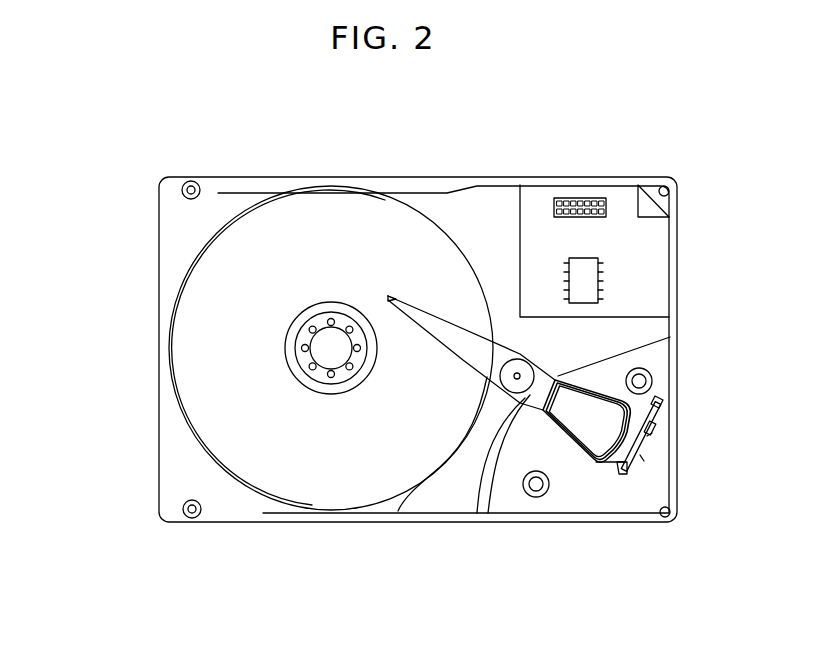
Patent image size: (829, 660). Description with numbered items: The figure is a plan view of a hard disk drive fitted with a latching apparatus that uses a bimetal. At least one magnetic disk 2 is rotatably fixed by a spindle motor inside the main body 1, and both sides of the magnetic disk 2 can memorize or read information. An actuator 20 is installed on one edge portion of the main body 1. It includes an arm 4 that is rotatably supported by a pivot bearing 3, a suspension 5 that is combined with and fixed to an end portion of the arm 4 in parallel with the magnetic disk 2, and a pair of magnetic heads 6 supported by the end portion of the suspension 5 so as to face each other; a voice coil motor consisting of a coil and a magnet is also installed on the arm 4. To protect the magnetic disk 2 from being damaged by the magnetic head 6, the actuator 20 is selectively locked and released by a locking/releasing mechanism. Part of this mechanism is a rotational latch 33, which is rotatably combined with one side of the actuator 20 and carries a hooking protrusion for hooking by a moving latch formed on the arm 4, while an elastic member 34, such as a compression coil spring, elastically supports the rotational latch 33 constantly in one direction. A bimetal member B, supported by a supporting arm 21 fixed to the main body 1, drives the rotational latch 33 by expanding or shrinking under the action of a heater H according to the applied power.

The main body 1 is at (177, 237).
The magnetic disk 2 is at (192, 343).
The pivot bearing 3 is at (527, 362).
The arm 4 is at (477, 513).
The suspension 5 is at (460, 335).
The magnetic head 6 is at (393, 300).
The actuator 20 is at (612, 371).
The supporting arm 21 is at (665, 400).
The bimetal member B is at (657, 427).
The heater H is at (653, 434).
The rotational latch 33 is at (623, 475).
The elastic member 34 is at (641, 457).